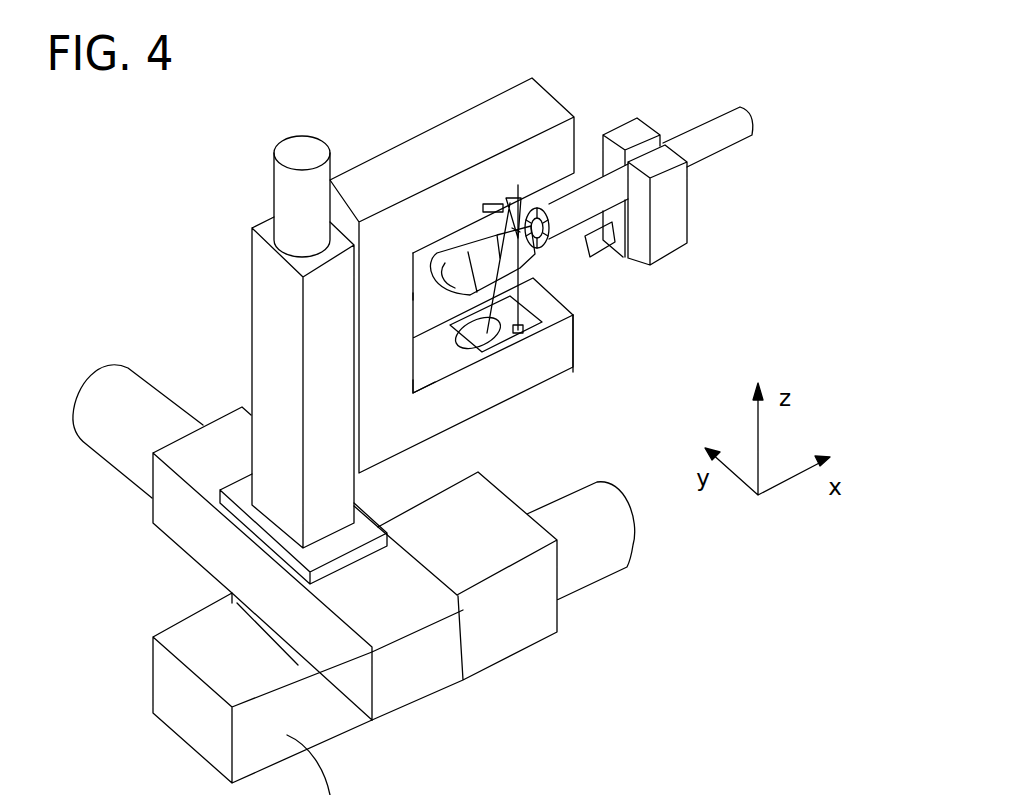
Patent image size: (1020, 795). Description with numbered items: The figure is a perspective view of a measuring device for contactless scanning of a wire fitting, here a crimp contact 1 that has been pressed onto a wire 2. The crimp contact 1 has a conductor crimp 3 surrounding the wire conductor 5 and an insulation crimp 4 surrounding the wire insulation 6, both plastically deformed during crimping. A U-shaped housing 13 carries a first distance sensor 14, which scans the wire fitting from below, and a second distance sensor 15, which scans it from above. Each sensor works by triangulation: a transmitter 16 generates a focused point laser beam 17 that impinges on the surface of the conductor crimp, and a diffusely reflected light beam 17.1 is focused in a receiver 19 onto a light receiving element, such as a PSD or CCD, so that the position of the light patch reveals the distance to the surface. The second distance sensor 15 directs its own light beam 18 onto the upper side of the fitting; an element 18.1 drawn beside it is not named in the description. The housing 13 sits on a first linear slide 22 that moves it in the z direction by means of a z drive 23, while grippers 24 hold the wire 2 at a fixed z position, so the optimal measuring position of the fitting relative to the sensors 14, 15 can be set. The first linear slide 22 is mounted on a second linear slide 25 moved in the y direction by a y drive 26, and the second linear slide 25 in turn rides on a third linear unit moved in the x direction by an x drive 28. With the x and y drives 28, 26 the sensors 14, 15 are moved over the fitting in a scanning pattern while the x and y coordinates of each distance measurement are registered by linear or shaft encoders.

The crimp contact 1 is at (497, 246).
The wire 2 is at (743, 150).
The conductor crimp 3 is at (597, 245).
The insulation crimp 4 is at (558, 226).
The wire conductor 5 is at (498, 243).
The wire insulation 6 is at (723, 130).
The U-shaped housing 13 is at (363, 175).
The first distance sensor 14 is at (545, 258).
The second distance sensor 15 is at (483, 208).
The transmitter 16 is at (553, 335).
The point laser beam 17 is at (557, 298).
The diffusely reflected light beam 17.1 is at (414, 395).
The light beam of the second distance sensor 18 is at (548, 203).
The rod end 18.1 is at (515, 232).
The receiver 19 is at (472, 330).
The first linear slide 22 is at (265, 277).
The z drive 23 is at (305, 152).
The grippers 24 is at (631, 135).
The second linear slide 25 is at (173, 497).
The y drive 26 is at (118, 385).
The x drive 28 is at (597, 560).